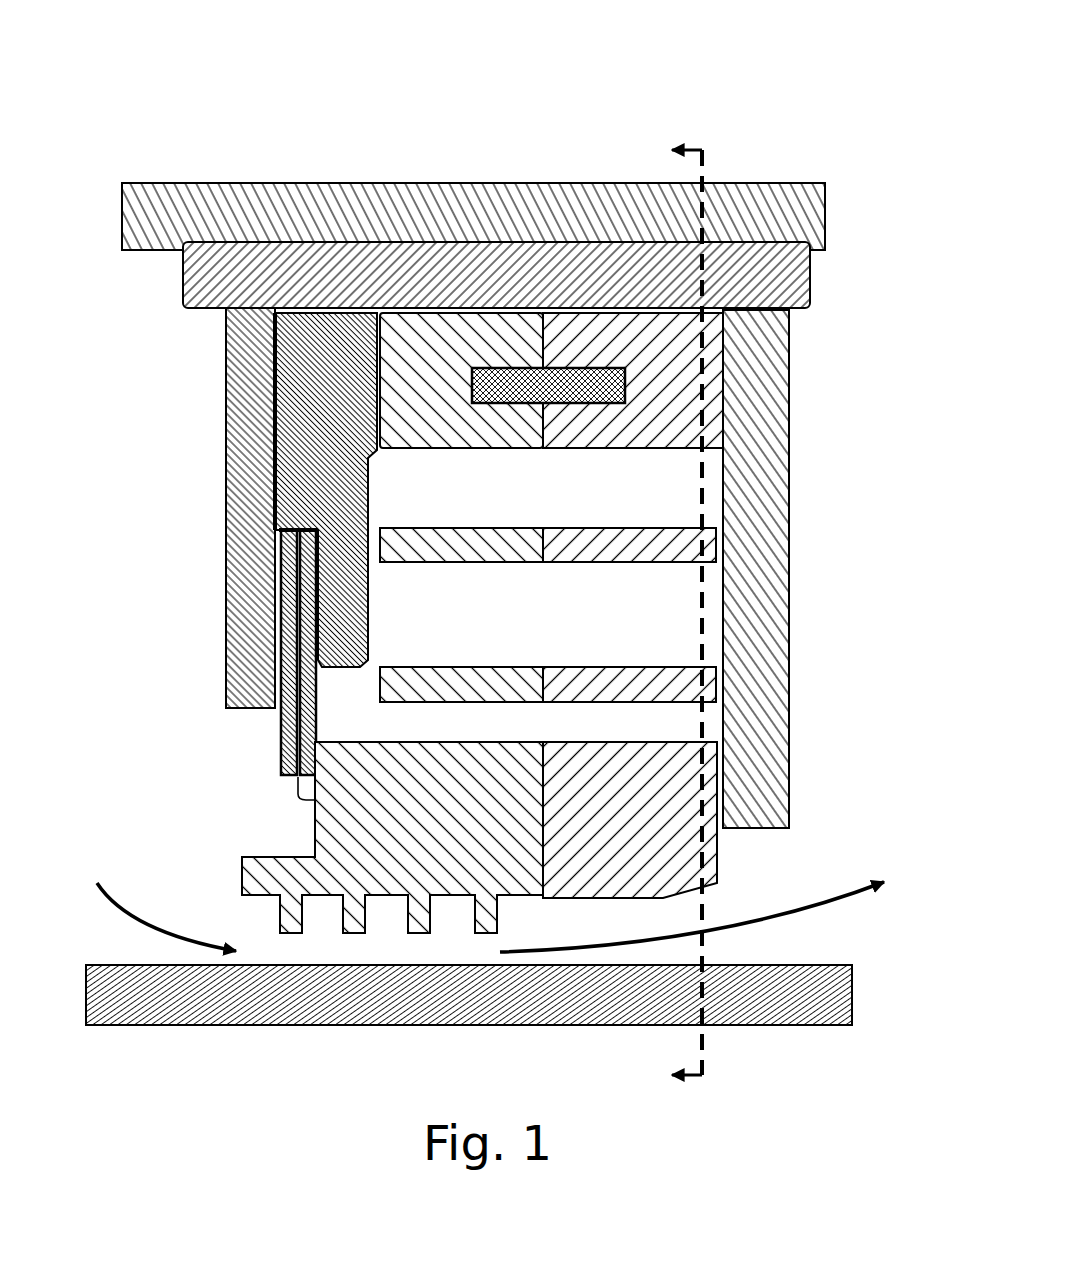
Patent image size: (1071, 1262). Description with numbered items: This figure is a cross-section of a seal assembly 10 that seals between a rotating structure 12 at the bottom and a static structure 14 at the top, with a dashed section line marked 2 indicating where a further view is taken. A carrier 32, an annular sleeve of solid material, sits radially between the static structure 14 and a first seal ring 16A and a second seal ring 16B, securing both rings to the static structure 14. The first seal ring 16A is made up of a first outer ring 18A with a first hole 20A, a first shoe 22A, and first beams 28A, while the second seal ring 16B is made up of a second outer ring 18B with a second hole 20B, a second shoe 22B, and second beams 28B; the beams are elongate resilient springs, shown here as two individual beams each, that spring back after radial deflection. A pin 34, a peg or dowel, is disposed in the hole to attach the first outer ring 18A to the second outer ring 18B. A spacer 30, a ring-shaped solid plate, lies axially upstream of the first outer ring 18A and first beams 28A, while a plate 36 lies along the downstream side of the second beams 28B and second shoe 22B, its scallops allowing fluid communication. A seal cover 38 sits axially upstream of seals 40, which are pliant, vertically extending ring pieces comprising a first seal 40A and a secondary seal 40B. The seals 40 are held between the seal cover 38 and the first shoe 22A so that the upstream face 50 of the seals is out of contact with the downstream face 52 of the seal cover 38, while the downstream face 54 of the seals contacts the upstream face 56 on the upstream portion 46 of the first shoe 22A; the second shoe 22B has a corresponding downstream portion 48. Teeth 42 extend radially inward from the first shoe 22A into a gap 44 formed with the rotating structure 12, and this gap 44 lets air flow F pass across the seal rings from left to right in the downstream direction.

The seal assembly 10 is at (126, 106).
The rotating structure 12 is at (855, 1000).
The static structure 14 is at (120, 213).
The first seal ring 16A is at (444, 303).
The second seal ring 16B is at (642, 303).
The first outer ring 18A is at (440, 450).
The second outer ring 18B is at (723, 388).
The first hole 20A is at (475, 405).
The second hole 20B is at (626, 404).
The first shoe 22A is at (306, 840).
The second shoe 22B is at (722, 856).
The first beams 28A is at (483, 528).
The second beams 28B is at (716, 540).
The spacer 30 is at (305, 470).
The carrier 32 is at (812, 284).
The pin 34 is at (588, 360).
The plate 36 is at (790, 489).
The seal cover 38 is at (246, 348).
The seals 40 is at (223, 660).
The first seal 40A is at (289, 780).
The secondary seal 40B is at (300, 790).
The teeth 42 is at (420, 935).
The gap 44 is at (328, 953).
The upstream portion 46 is at (346, 740).
The downstream portion 48 is at (685, 745).
The upstream face 50 is at (280, 681).
The downstream face 52 is at (290, 404).
The downstream face 54 is at (318, 578).
The upstream face 56 is at (315, 806).
The air flow F is at (130, 918).
The section line 2 is at (674, 614).